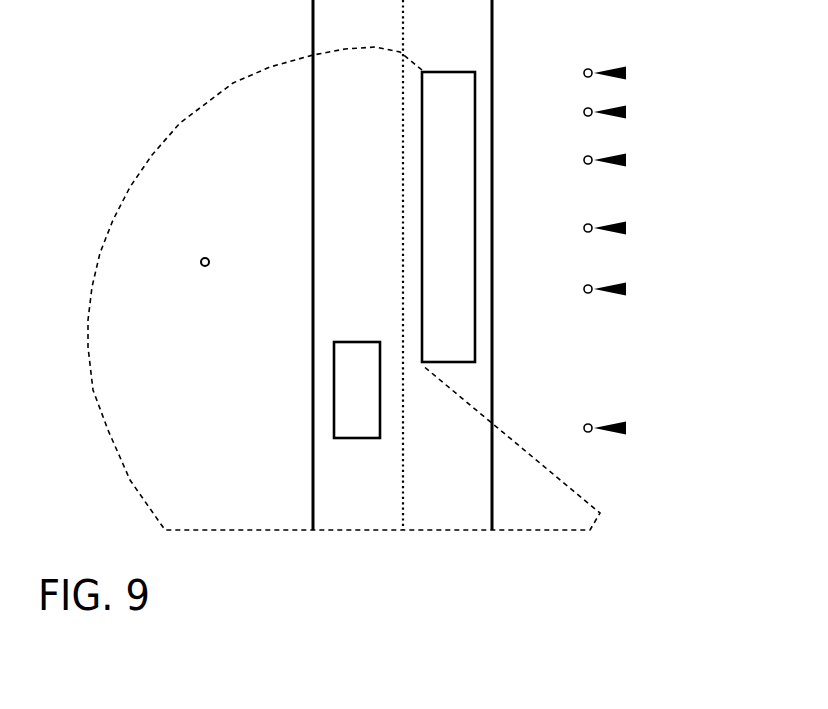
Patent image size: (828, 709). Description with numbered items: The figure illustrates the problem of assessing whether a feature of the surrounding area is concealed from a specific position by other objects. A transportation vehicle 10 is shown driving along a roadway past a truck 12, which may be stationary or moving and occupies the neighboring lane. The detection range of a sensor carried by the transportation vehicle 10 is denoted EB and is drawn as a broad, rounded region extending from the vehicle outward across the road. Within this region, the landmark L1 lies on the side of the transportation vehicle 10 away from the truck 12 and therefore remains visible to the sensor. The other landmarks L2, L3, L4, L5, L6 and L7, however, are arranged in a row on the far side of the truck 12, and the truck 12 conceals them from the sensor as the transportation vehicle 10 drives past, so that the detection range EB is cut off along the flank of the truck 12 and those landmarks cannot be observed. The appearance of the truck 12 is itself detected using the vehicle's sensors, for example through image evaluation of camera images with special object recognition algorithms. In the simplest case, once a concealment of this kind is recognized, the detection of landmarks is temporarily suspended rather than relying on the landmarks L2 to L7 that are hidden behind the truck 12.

The detection range EB is at (232, 83).
The landmark L1 is at (206, 257).
The transportation vehicle 10 is at (354, 340).
The truck 12 is at (475, 231).
The landmark L2 is at (626, 428).
The landmark L3 is at (626, 289).
The landmark L4 is at (626, 228).
The landmark L5 is at (626, 160).
The landmark L6 is at (626, 112).
The landmark L7 is at (626, 73).